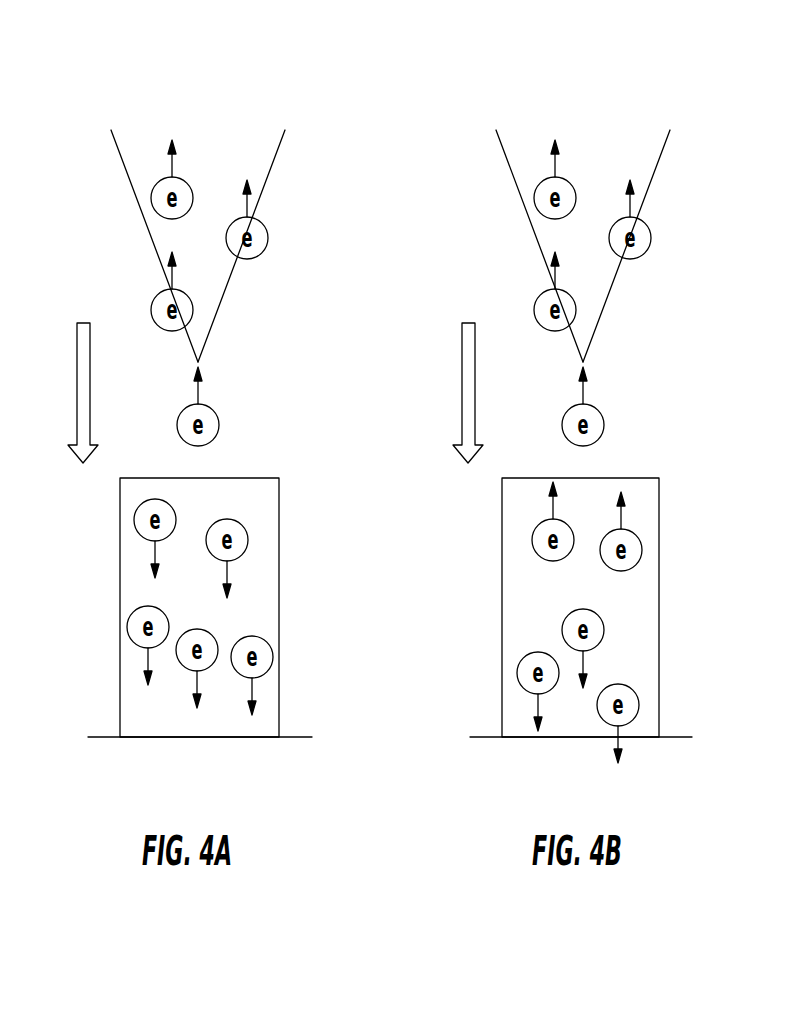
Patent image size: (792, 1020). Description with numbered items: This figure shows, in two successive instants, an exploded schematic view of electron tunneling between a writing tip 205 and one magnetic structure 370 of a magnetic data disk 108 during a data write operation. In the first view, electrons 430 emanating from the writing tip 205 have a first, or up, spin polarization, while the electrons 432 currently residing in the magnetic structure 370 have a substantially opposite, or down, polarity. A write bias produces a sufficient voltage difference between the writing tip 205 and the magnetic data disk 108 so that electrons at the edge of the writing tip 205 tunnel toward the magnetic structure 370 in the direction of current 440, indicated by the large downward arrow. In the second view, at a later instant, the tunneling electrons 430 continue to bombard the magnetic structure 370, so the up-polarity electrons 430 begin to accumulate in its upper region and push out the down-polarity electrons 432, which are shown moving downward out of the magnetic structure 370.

In FIG. 4A, the magnetic data disk 108 is at (212, 790).
In FIG. 4B, the magnetic data disk 108 is at (592, 790).
In FIG. 4A, the writing tip 205 is at (204, 345).
In FIG. 4B, the writing tip 205 is at (589, 345).
In FIG. 4A, the magnetic structure 370 is at (279, 515).
In FIG. 4B, the magnetic structure 370 is at (659, 515).
In FIG. 4A, the electrons 430 is at (268, 238).
In FIG. 4B, the electrons 430 is at (604, 425).
In FIG. 4A, the electrons 432 is at (134, 520).
In FIG. 4B, the electrons 432 is at (604, 635).
In FIG. 4A, the current 440 is at (90, 408).
In FIG. 4B, the current 440 is at (475, 408).